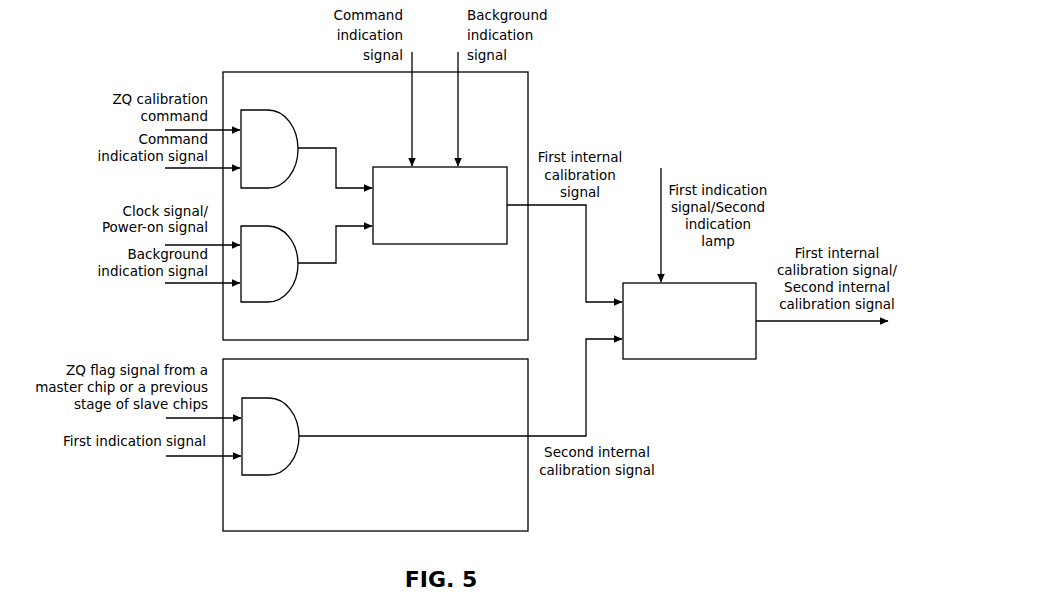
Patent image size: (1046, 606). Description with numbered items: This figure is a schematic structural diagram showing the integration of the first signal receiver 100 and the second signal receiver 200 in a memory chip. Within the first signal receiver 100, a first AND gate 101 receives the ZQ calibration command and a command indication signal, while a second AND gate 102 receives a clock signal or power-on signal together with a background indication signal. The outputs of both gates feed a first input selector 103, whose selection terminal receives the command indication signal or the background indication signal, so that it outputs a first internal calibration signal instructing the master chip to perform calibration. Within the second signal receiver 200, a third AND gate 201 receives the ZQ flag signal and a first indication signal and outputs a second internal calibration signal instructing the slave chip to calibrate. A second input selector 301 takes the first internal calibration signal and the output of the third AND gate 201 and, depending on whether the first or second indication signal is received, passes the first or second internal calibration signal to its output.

The first signal receiver 100 is at (527, 72).
The first AND gate 101 is at (256, 110).
The second AND gate 102 is at (256, 226).
The first input selector 103 is at (487, 167).
The second signal receiver 200 is at (528, 359).
The third AND gate 201 is at (257, 398).
The second input selector 301 is at (737, 283).